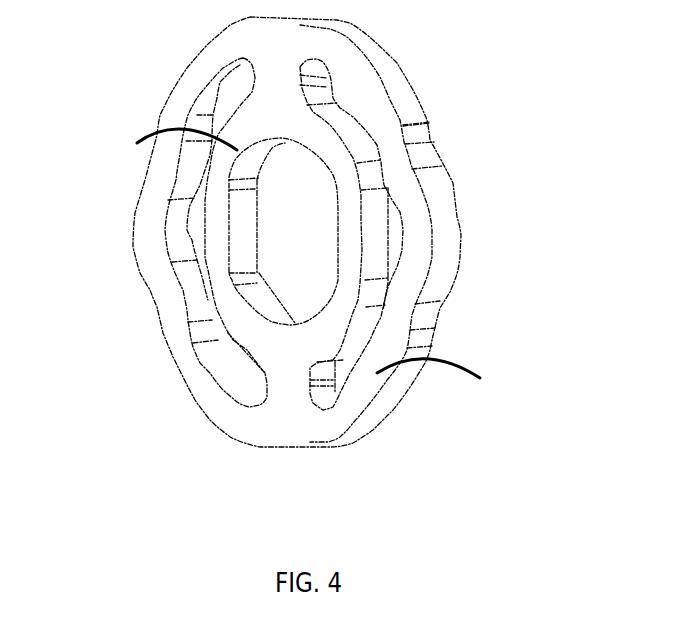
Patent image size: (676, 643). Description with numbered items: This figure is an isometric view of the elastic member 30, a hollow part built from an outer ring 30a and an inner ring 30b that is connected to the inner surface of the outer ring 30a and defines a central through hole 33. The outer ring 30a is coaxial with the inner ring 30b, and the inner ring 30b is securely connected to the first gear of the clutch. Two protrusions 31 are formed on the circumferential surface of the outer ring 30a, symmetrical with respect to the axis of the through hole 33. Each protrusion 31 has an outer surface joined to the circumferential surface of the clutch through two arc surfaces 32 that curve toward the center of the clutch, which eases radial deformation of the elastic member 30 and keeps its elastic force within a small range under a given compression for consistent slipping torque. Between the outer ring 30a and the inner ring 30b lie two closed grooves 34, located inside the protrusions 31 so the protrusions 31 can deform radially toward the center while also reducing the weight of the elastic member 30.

The elastic member 30 is at (187, 373).
The outer ring 30a is at (454, 376).
The inner ring 30b is at (166, 152).
The protrusion 31 is at (448, 240).
The arc surface 32 is at (403, 125).
The through hole 33 is at (289, 202).
The closed groove 34 is at (205, 235).